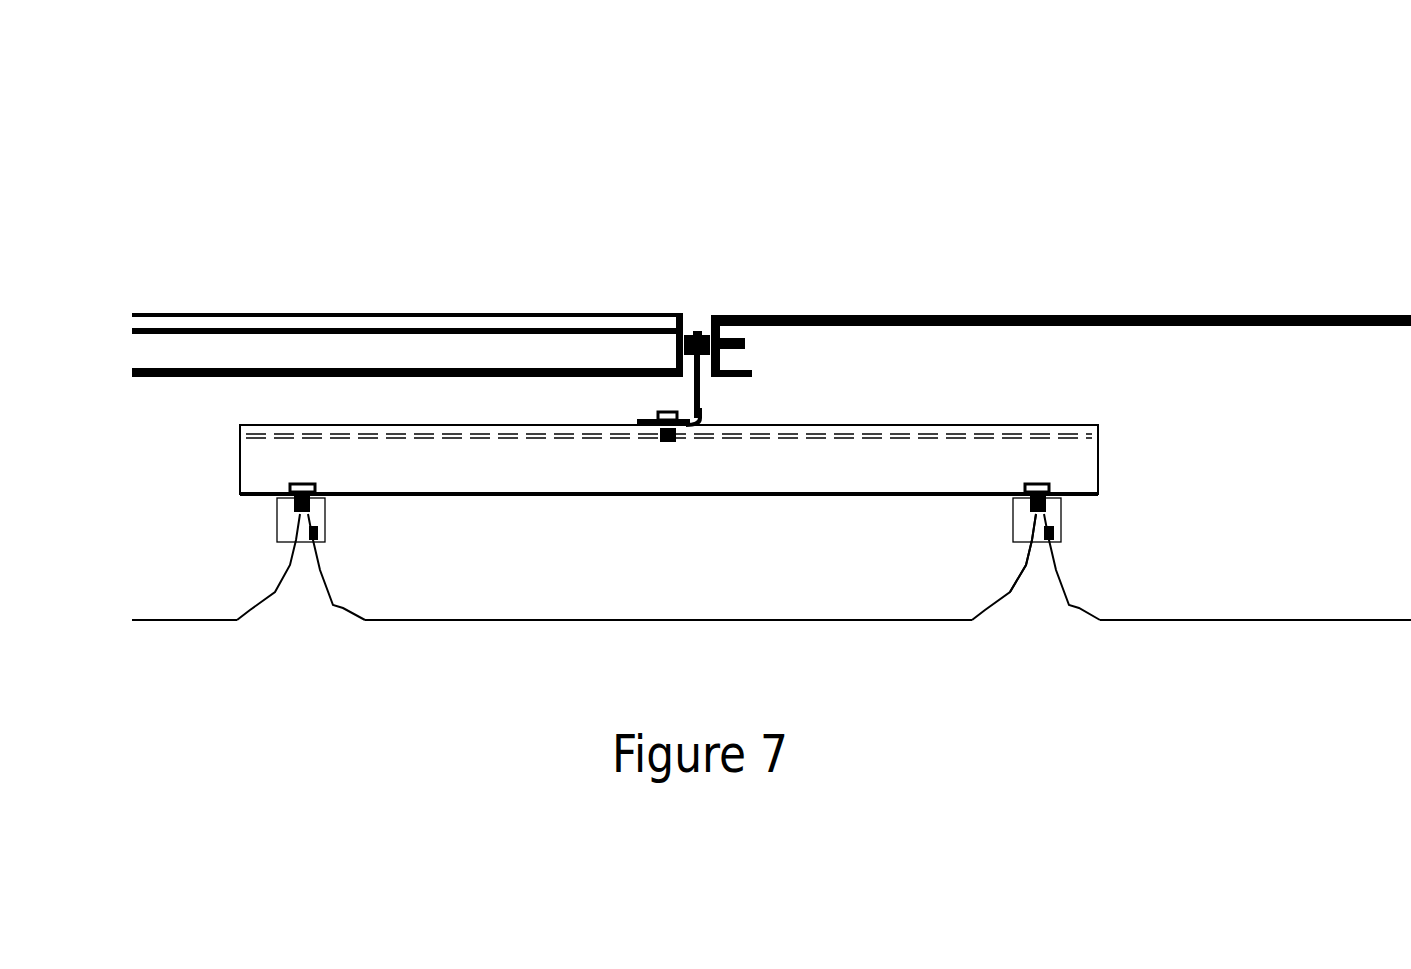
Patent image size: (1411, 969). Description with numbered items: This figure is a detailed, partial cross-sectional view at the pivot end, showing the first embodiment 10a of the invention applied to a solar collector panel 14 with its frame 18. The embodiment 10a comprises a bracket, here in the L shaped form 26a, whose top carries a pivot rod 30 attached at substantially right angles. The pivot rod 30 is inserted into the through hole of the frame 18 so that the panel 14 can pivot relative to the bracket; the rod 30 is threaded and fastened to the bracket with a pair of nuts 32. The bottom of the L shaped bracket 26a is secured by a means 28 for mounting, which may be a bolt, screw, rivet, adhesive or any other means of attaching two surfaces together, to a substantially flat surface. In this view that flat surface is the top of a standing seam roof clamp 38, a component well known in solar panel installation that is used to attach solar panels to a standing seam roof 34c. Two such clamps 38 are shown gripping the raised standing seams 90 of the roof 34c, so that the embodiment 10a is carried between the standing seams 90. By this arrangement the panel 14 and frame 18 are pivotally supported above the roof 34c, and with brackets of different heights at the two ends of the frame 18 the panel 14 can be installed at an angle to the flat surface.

The first embodiment 10a is at (692, 178).
The frame 18 is at (478, 341).
The solar collector panel 14 is at (940, 315).
The pivot rod 30 is at (736, 343).
The nuts 32 is at (701, 336).
The L shaped bracket 26a is at (703, 418).
The means for mounting 28 is at (665, 413).
The standing seam roof 34c is at (685, 618).
The standing seam roof clamp 38 is at (316, 515).
The standing seams 90 is at (1043, 598).